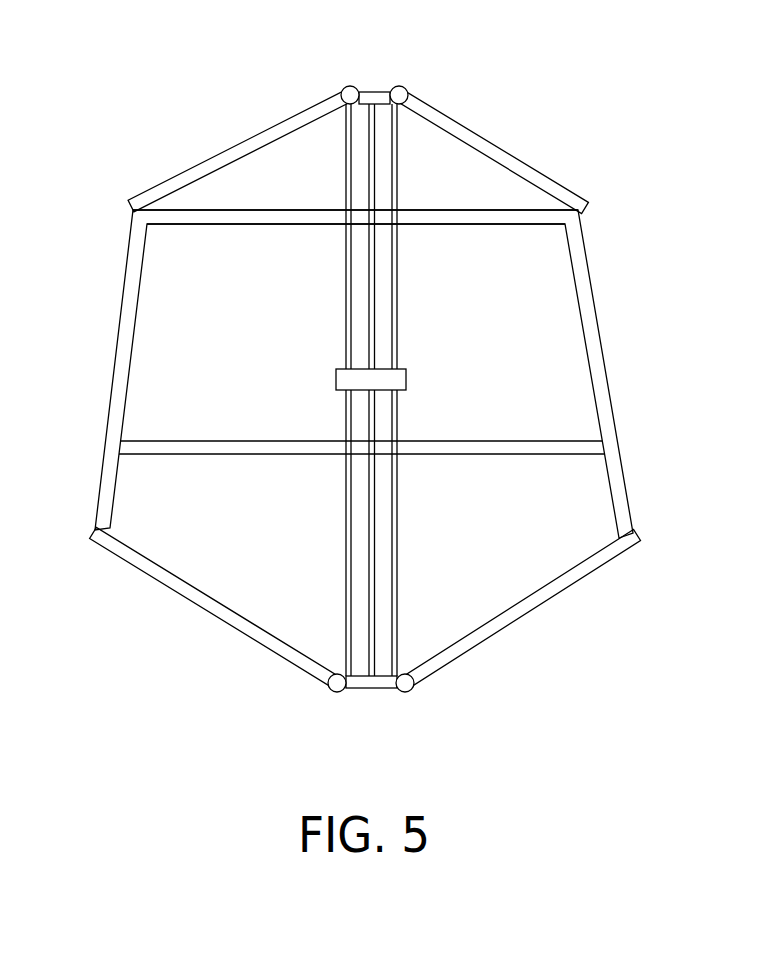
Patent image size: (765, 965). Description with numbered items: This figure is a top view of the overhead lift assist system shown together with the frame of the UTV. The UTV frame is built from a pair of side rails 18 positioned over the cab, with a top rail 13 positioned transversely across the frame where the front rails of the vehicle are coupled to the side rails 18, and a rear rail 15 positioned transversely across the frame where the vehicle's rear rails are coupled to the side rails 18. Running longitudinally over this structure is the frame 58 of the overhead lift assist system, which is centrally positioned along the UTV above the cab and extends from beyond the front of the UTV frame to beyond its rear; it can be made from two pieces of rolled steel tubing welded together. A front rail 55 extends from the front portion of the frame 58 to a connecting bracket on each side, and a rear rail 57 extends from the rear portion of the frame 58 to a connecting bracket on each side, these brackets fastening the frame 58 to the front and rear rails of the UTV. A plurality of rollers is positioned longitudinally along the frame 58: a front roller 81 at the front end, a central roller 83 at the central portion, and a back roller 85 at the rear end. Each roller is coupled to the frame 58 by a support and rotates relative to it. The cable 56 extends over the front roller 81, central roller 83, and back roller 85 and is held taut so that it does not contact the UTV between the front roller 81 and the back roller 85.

The top rail 13 is at (222, 445).
The rear rail 15 is at (263, 215).
The side rails 18 is at (118, 350).
The front rail 55 is at (220, 613).
The cable 56 is at (373, 340).
The rear rail 57 is at (262, 133).
The frame 58 is at (382, 263).
The front roller 81 is at (384, 690).
The central roller 83 is at (406, 380).
The back roller 85 is at (375, 93).